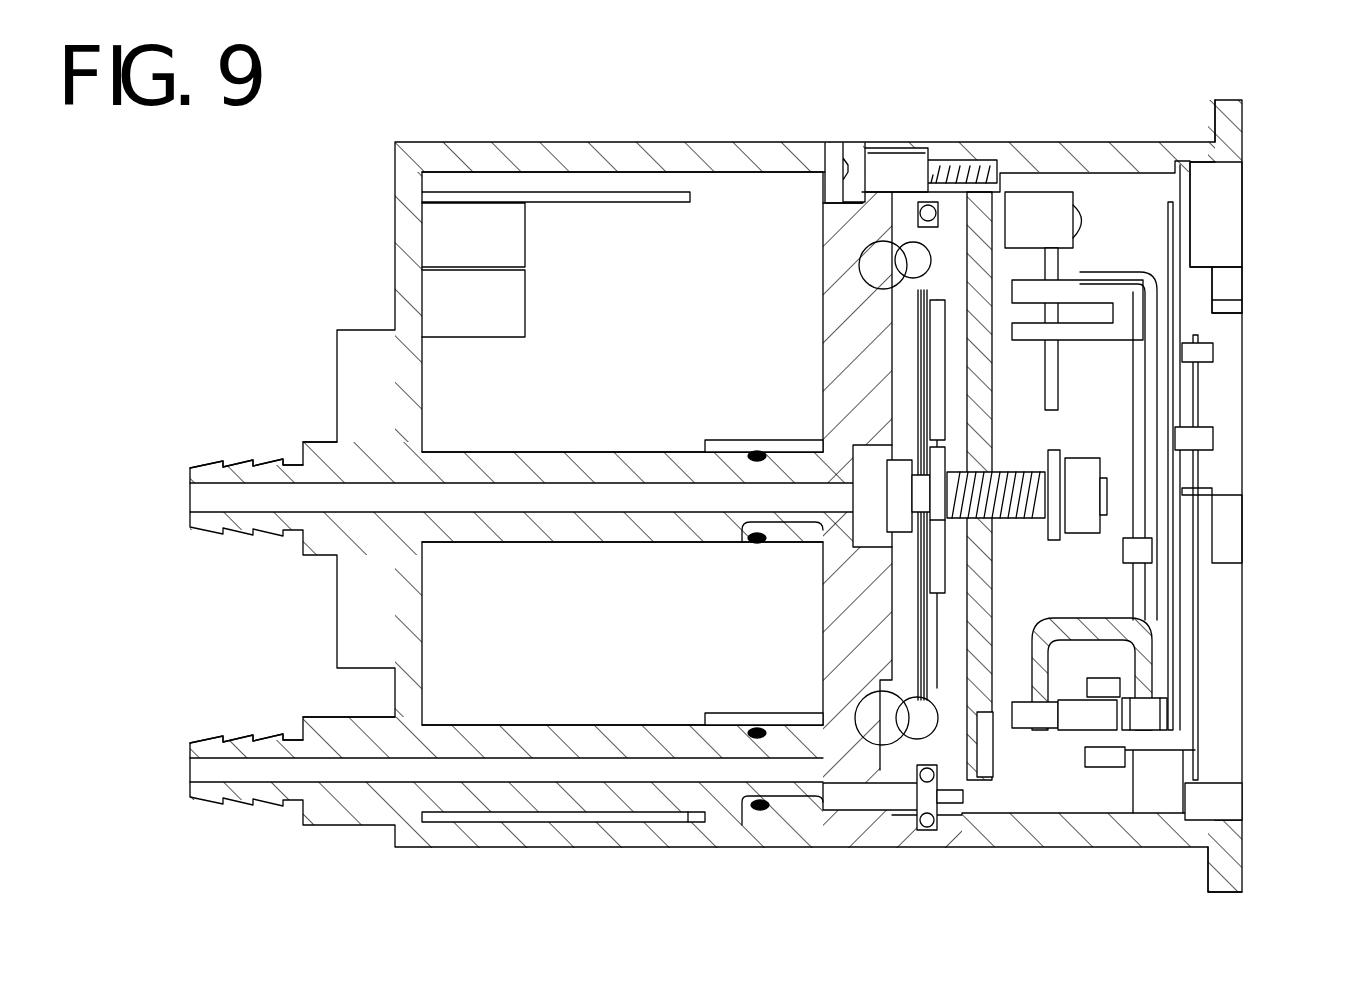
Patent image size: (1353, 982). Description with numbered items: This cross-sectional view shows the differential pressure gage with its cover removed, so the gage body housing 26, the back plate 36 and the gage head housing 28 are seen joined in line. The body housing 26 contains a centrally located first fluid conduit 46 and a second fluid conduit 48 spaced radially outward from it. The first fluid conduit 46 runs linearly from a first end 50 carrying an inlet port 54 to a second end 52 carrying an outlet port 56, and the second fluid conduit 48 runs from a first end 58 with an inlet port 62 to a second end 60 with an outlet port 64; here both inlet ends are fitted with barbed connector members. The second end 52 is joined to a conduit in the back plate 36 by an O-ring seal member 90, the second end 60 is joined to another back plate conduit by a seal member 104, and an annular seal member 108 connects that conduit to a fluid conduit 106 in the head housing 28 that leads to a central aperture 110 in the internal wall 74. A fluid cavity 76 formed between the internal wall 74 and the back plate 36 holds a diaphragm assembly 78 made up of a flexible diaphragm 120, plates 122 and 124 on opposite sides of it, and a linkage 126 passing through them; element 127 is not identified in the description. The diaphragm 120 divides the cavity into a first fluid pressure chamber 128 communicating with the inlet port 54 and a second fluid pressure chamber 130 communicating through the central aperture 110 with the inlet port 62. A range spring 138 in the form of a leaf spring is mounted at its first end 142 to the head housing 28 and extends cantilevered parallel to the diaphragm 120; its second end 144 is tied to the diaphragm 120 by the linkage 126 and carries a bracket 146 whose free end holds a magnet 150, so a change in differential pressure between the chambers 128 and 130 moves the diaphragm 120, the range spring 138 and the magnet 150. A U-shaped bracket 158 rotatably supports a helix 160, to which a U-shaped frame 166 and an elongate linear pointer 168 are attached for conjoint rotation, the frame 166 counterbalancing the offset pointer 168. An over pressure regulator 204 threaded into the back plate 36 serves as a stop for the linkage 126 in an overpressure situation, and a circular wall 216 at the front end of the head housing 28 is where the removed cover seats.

The gage body housing 26 is at (500, 142).
The gage head housing 28 is at (1040, 142).
The back plate 36 is at (838, 772).
The first fluid conduit 46 is at (540, 452).
The second fluid conduit 48 is at (545, 717).
The first end 50 is at (213, 465).
The second end 52 is at (790, 455).
The inlet port 54 is at (190, 493).
The outlet port 56 is at (790, 460).
The first end 58 is at (213, 740).
The second end 60 is at (787, 718).
The inlet port 62 is at (190, 770).
The outlet port 64 is at (793, 773).
The internal wall 74 is at (978, 372).
The fluid cavity 76 is at (877, 745).
The diaphragm assembly 78 is at (917, 253).
The resilient elastomeric seal member 90 is at (768, 528).
The seal member 104 is at (760, 807).
The fluid conduit 106 is at (965, 797).
The generally annular seal member 108 is at (932, 830).
The central aperture 110 is at (978, 455).
The flexible diaphragm 120 is at (912, 253).
The plate 122 is at (943, 625).
The plate 124 is at (920, 338).
The linkage 126 is at (1013, 520).
The piston plate 127 is at (960, 543).
The first fluid pressure chamber 128 is at (873, 280).
The second fluid pressure chamber 130 is at (962, 238).
The range spring 138 is at (1075, 385).
The first end 142 is at (1080, 210).
The second end 144 is at (1078, 547).
The bracket 146 is at (1077, 608).
The magnet 150 is at (1105, 757).
The U-shaped bracket 158 is at (1147, 657).
The helix 160 is at (1078, 733).
The U-shaped frame 166 is at (1195, 750).
The elongate linear pointer 168 is at (1202, 393).
The over pressure regulator 204 is at (1228, 282).
The circular wall 216 is at (1242, 187).